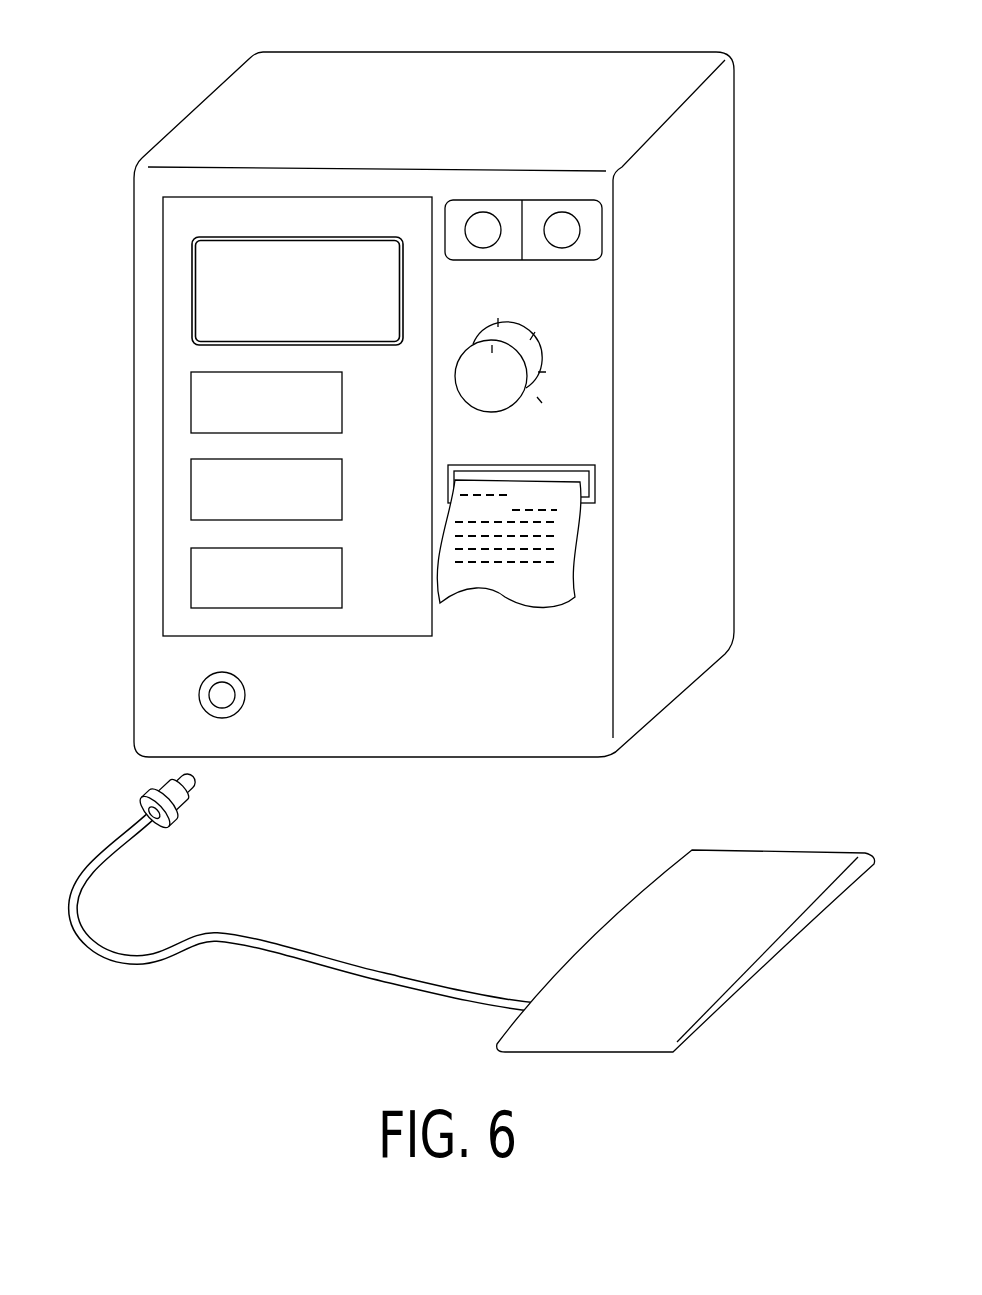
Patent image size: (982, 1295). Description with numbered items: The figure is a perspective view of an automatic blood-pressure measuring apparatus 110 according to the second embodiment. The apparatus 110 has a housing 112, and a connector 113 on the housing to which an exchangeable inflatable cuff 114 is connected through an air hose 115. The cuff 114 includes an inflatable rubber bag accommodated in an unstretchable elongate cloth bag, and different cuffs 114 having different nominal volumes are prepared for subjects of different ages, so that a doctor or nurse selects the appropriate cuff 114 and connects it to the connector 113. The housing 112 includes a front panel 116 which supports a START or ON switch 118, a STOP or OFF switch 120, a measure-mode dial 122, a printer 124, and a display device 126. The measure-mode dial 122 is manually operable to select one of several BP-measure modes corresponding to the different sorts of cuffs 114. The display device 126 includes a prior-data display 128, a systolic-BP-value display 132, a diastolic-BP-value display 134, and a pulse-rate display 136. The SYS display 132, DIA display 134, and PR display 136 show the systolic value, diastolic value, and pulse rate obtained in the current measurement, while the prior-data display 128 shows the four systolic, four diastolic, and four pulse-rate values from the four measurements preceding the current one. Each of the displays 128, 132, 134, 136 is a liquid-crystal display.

The automatic blood-pressure measuring apparatus 110 is at (136, 96).
The housing 112 is at (345, 67).
The connector 113 is at (225, 708).
The inflatable cuff 114 is at (612, 1032).
The air hose 115 is at (297, 955).
The front panel 116 is at (597, 430).
The START switch 118 is at (510, 208).
The STOP switch 120 is at (588, 223).
The measure-mode dial 122 is at (512, 375).
The printer 124 is at (590, 493).
The display device 126 is at (177, 220).
The prior-data display 128 is at (208, 320).
The systolic-BP-value display 132 is at (207, 415).
The diastolic-BP-value display 134 is at (205, 503).
The pulse-rate display 136 is at (203, 590).